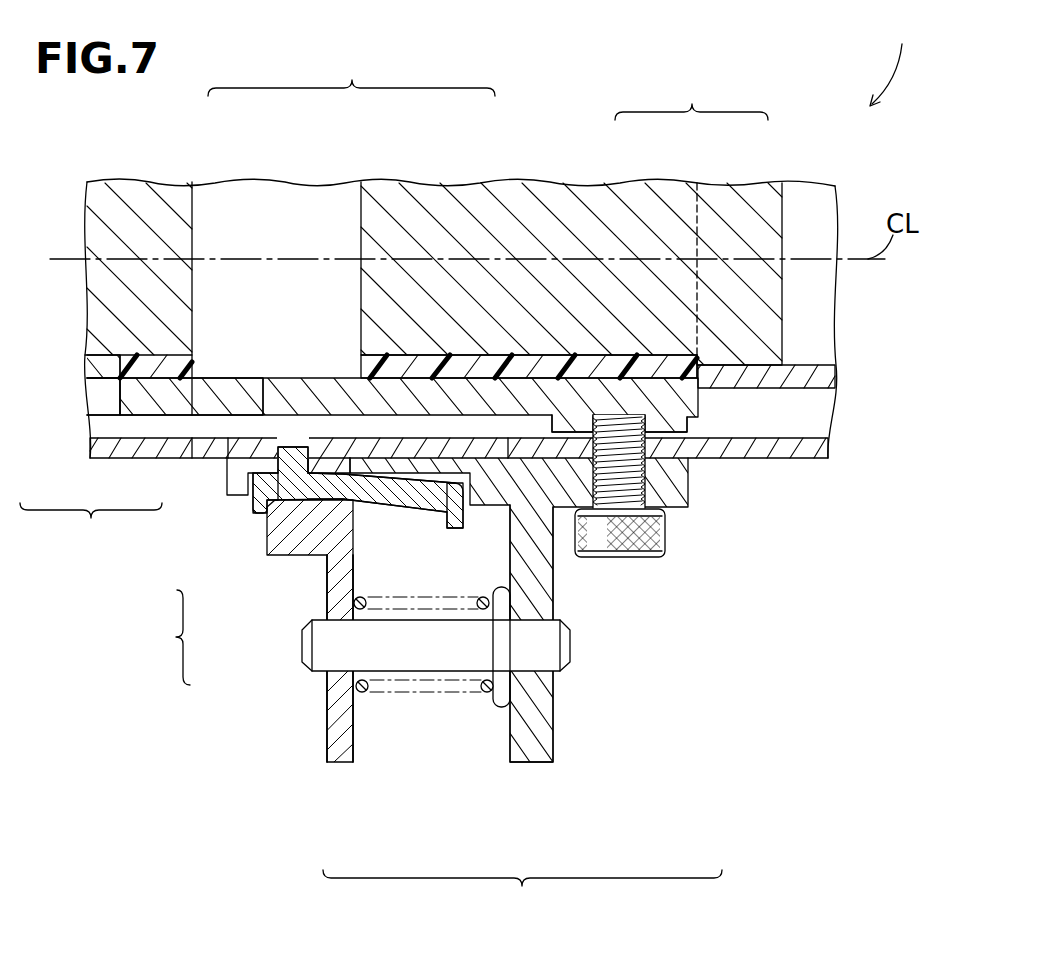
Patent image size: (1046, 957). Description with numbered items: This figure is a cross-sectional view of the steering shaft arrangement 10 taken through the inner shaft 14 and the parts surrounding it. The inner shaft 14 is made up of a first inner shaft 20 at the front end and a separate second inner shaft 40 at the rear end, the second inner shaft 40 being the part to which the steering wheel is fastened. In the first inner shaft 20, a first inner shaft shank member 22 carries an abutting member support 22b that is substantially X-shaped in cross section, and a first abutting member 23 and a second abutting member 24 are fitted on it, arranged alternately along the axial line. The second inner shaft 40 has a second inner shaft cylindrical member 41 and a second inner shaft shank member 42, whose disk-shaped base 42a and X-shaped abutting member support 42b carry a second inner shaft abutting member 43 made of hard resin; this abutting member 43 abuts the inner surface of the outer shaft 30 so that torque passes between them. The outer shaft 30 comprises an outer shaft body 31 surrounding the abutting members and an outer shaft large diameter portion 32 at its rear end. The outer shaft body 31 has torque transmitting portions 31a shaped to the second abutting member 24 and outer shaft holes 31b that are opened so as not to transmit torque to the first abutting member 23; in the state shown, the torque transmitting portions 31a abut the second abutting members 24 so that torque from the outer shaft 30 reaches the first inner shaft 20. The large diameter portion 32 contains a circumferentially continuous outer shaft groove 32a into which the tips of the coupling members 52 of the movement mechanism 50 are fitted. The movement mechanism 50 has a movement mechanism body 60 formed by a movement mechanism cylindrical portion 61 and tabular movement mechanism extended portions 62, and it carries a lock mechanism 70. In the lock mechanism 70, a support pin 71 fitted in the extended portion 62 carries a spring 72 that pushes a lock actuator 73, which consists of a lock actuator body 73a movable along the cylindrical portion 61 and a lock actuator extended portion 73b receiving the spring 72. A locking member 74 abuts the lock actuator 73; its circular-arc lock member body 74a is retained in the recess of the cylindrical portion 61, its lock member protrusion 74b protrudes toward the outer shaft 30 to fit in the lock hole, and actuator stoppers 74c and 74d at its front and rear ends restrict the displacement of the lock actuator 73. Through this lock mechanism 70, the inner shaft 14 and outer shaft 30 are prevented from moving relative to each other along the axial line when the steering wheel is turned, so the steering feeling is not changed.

The image forming apparatus 10 is at (894, 60).
The inner shaft 14 is at (351, 71).
The first inner shaft 20 is at (174, 180).
The first inner shaft shank member 22 is at (449, 181).
The abutting member support 22b is at (88, 219).
The first abutting member 23 is at (105, 377).
The second abutting member 24 is at (125, 352).
The outer shaft 30 is at (408, 431).
The outer shaft body 31 is at (91, 528).
The torque transmitting portion 31a is at (157, 417).
The outer shaft hole 31b is at (93, 397).
The outer shaft large diameter portion 32 is at (552, 428).
The outer shaft groove 32a is at (628, 418).
The second inner shaft 40 is at (426, 182).
The second inner shaft cylindrical member 41 is at (797, 390).
The second inner shaft shank member 42 is at (691, 94).
The base 42a is at (733, 180).
The abutting member support 42b is at (622, 178).
The second inner shaft abutting member 43 is at (456, 355).
The movement mechanism 50 is at (522, 899).
The coupling member 52 is at (628, 557).
The movement mechanism body 60 is at (519, 666).
The movement mechanism cylindrical portion 61 is at (690, 482).
The movement mechanism extended portion 62 is at (523, 766).
The lock mechanism 70 is at (243, 686).
The support pin 71 is at (302, 646).
The spring 72 is at (424, 693).
The lock actuator 73 is at (242, 658).
The lock actuator body 73a is at (323, 592).
The lock actuator extended portion 73b is at (322, 613).
The locking member 74 is at (338, 518).
The lock member body 74a is at (388, 503).
The lock member protrusion 74b is at (275, 462).
The actuator stopper 74c is at (260, 516).
The actuator stopper 74d is at (449, 530).